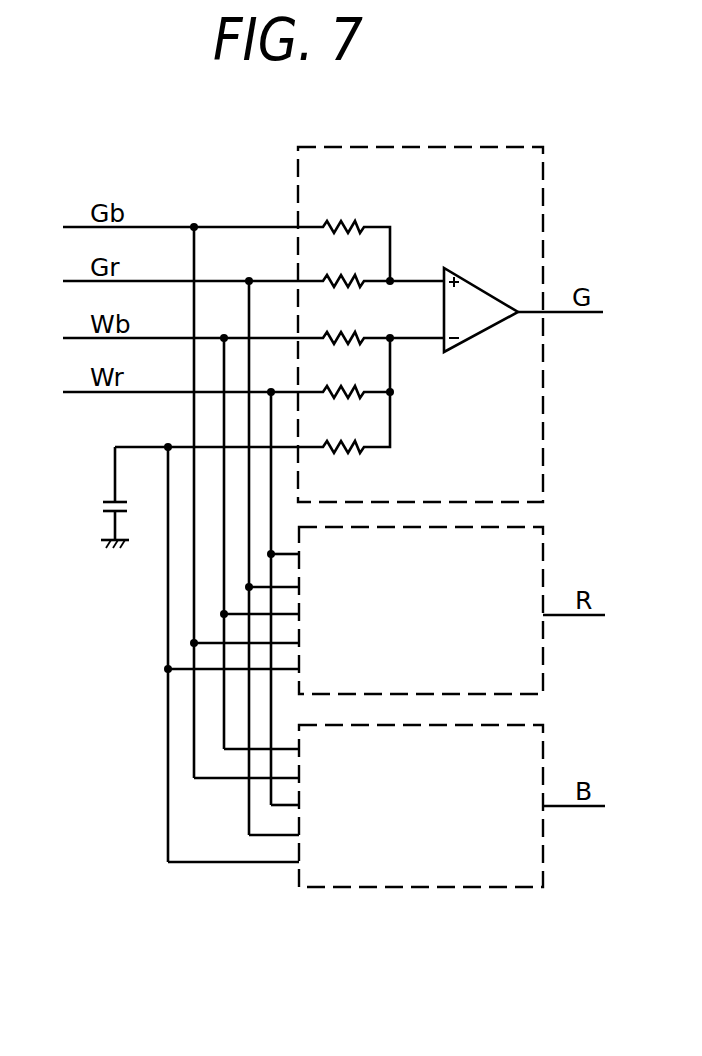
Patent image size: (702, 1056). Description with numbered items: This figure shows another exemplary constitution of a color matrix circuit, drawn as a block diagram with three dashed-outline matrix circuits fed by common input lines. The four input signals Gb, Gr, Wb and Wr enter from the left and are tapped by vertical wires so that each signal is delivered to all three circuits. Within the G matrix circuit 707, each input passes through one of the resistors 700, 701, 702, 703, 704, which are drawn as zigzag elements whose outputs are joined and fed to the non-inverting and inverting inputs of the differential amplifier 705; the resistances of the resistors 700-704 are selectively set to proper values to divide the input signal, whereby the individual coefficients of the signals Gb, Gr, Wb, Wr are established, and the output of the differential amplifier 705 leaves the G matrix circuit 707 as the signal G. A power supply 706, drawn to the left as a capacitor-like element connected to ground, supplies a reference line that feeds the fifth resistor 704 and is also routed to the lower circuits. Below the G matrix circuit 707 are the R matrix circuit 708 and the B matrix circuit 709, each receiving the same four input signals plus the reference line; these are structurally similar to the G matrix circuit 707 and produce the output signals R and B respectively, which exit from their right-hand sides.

The resistor 700 is at (343, 223).
The resistor 701 is at (343, 280).
The resistor 702 is at (343, 336).
The resistor 703 is at (343, 393).
The resistor 704 is at (343, 445).
The differential amplifier 705 is at (477, 285).
The power supply 706 is at (102, 510).
The G matrix circuit 707 is at (545, 430).
The R matrix circuit 708 is at (545, 668).
The B matrix circuit 709 is at (545, 862).